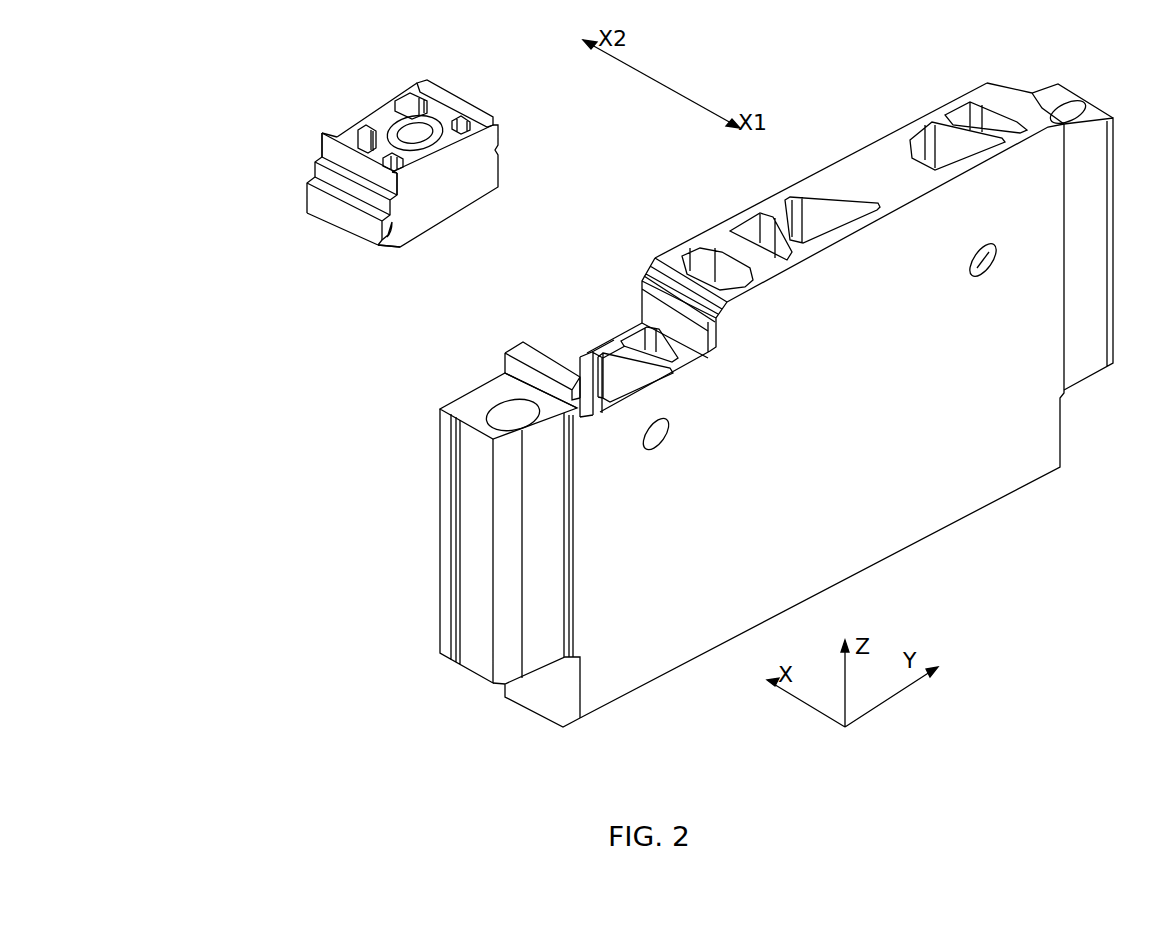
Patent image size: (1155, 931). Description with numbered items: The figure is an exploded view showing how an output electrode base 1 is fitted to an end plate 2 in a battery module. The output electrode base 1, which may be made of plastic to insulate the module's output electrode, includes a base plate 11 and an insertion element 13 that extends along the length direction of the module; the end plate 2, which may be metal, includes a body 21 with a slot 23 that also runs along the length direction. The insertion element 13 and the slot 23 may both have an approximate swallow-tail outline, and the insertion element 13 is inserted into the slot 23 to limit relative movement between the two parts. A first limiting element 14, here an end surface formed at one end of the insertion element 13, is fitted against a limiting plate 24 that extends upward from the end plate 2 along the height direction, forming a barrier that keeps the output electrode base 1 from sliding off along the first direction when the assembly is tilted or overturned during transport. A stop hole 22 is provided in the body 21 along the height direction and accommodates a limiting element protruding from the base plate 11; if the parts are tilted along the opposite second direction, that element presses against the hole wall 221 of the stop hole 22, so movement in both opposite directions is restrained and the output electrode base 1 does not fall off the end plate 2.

The output electrode base 1 is at (288, 150).
The base plate 11 is at (455, 222).
The insertion element 13 is at (333, 222).
The first limiting element 14 is at (378, 247).
The end plate 2 is at (835, 135).
The body 21 is at (850, 465).
The stop hole 22 is at (621, 380).
The hole wall 221 is at (630, 345).
The slot 23 is at (658, 308).
The limiting plate 24 is at (682, 262).